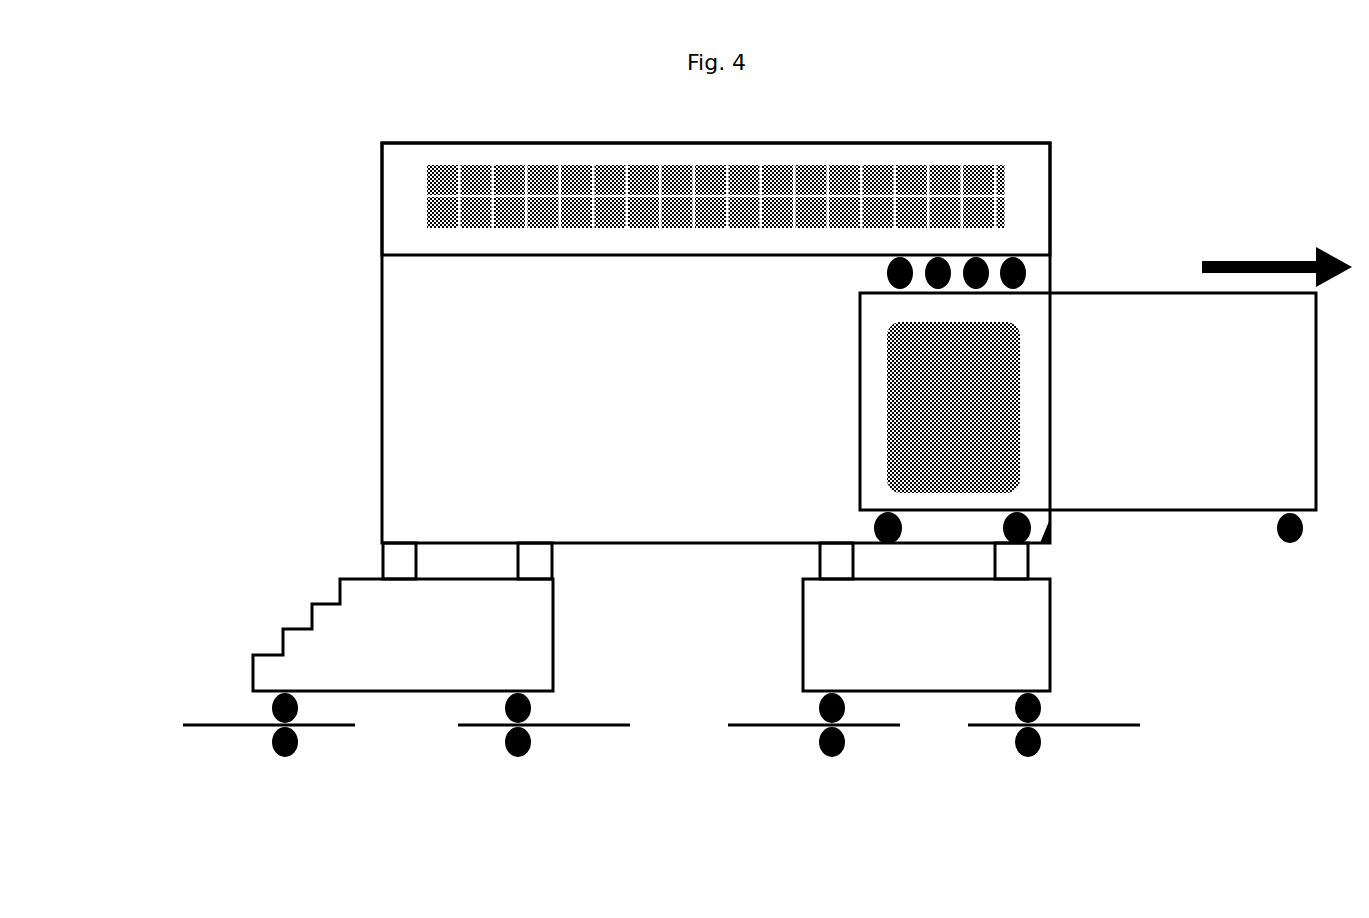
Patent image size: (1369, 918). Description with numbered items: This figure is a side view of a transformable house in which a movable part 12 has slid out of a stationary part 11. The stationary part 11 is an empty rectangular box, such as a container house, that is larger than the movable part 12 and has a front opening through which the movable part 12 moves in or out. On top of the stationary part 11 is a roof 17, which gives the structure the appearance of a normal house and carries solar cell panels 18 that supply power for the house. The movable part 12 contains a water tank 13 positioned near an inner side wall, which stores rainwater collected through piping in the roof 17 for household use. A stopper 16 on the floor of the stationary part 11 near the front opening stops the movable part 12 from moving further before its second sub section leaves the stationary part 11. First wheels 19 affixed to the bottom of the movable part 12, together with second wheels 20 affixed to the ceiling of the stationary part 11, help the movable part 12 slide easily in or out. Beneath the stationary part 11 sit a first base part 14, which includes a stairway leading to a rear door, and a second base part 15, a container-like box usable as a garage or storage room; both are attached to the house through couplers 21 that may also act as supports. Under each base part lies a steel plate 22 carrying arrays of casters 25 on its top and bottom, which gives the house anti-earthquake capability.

The stationary part 11 is at (384, 342).
The movable part 12 is at (1212, 490).
The water tank 13 is at (970, 378).
The first base part 14 is at (403, 663).
The second base part 15 is at (928, 663).
The stopper 16 is at (1053, 535).
The roof 17 is at (396, 213).
The solar cell panels 18 is at (847, 180).
The first wheels 19 is at (1032, 523).
The second wheels 20 is at (1024, 273).
The couplers 21 is at (398, 562).
The steel plate 22 is at (222, 727).
The casters 25 is at (531, 707).